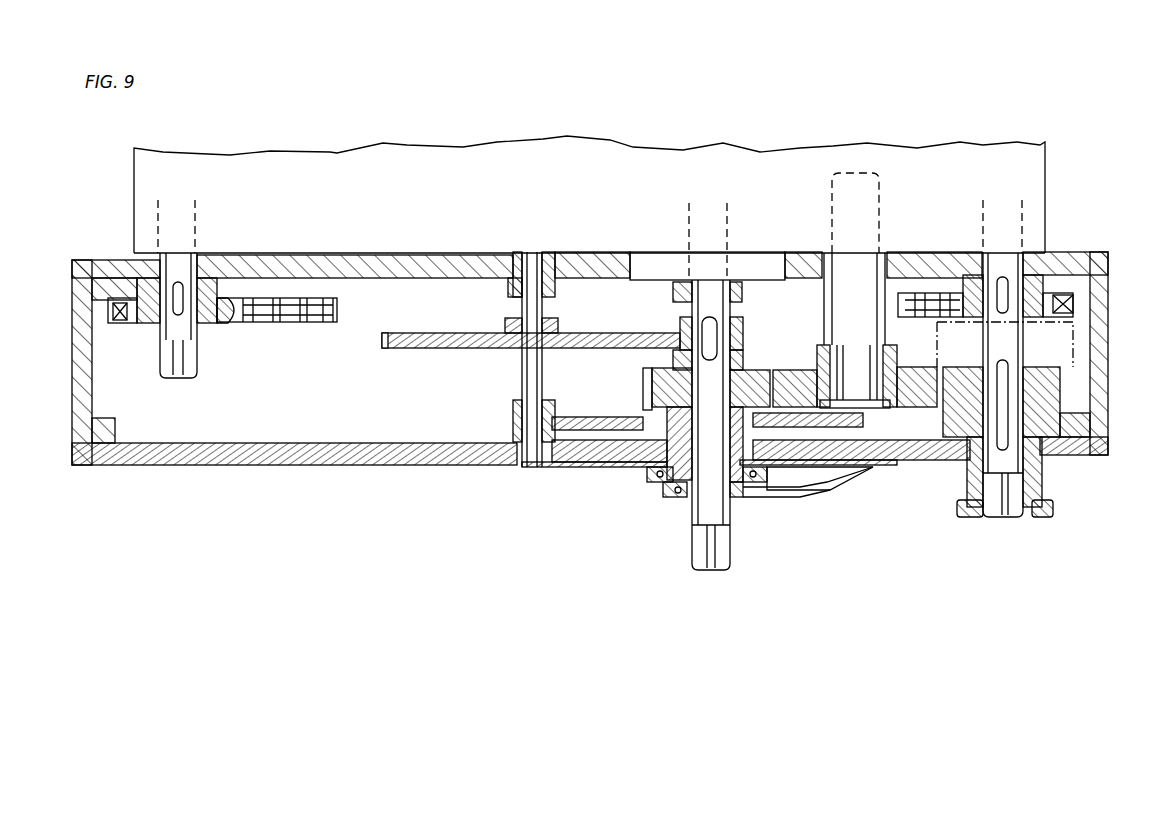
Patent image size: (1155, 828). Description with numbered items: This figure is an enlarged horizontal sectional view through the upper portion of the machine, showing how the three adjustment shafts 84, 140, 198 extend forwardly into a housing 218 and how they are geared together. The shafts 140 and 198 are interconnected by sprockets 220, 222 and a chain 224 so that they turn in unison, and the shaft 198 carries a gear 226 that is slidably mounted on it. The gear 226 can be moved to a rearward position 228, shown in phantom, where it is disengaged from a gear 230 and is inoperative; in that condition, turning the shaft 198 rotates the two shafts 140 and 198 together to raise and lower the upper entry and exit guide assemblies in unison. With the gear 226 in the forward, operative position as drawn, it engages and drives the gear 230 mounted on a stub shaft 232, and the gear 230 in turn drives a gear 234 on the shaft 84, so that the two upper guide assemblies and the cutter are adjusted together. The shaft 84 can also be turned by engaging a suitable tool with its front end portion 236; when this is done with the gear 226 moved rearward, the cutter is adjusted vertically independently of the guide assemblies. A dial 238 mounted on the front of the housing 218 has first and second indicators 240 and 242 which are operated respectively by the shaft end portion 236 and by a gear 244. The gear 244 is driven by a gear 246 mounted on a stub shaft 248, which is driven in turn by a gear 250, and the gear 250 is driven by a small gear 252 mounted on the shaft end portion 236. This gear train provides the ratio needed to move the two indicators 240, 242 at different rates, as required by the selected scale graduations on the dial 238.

The adjustment shaft 84 is at (732, 307).
The adjustment shaft 140 is at (198, 330).
The adjustment shaft 198 is at (1027, 467).
The housing 218 is at (282, 465).
The sprocket 220 is at (207, 253).
The sprocket 222 is at (1042, 273).
The chain 224 is at (308, 297).
The gear 226 is at (1065, 390).
The rearward position 228 is at (1070, 342).
The gear 230 is at (910, 400).
The stub shaft 232 is at (893, 217).
The gear 234 is at (758, 368).
The front end portion 236 is at (732, 558).
The dial 238 is at (563, 467).
The first indicator 240 is at (653, 485).
The second indicator 242 is at (670, 498).
The gear 244 is at (640, 415).
The gear 246 is at (550, 395).
The stub shaft 248 is at (525, 382).
The gear 250 is at (600, 317).
The small gear 252 is at (740, 323).